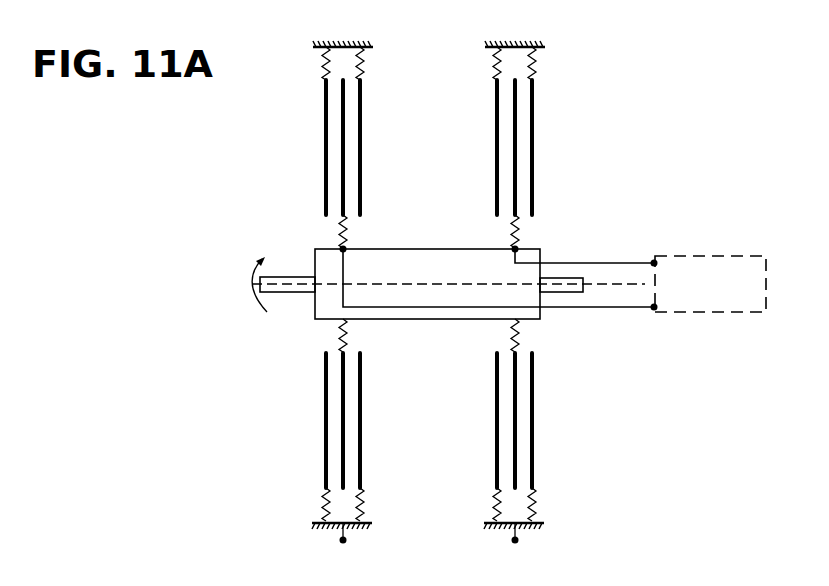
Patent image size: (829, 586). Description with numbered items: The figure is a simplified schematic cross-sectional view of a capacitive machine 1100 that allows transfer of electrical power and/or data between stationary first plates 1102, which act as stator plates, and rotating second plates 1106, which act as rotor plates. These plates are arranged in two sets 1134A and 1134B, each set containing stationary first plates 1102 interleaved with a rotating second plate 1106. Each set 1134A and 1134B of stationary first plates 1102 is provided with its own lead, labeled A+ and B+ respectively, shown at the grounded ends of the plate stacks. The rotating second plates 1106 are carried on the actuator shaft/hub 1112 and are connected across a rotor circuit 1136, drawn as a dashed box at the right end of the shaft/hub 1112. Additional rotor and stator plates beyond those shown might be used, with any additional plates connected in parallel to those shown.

The capacitive machine 1100 is at (205, 220).
The stationary first plates 1102 is at (326, 147).
The rotating second plates 1106 is at (343, 163).
The actuator shaft/hub 1112 is at (290, 292).
The first set of plates 1134A is at (316, 189).
The second set of plates 1134B is at (494, 194).
The rotor circuit 1136 is at (710, 284).